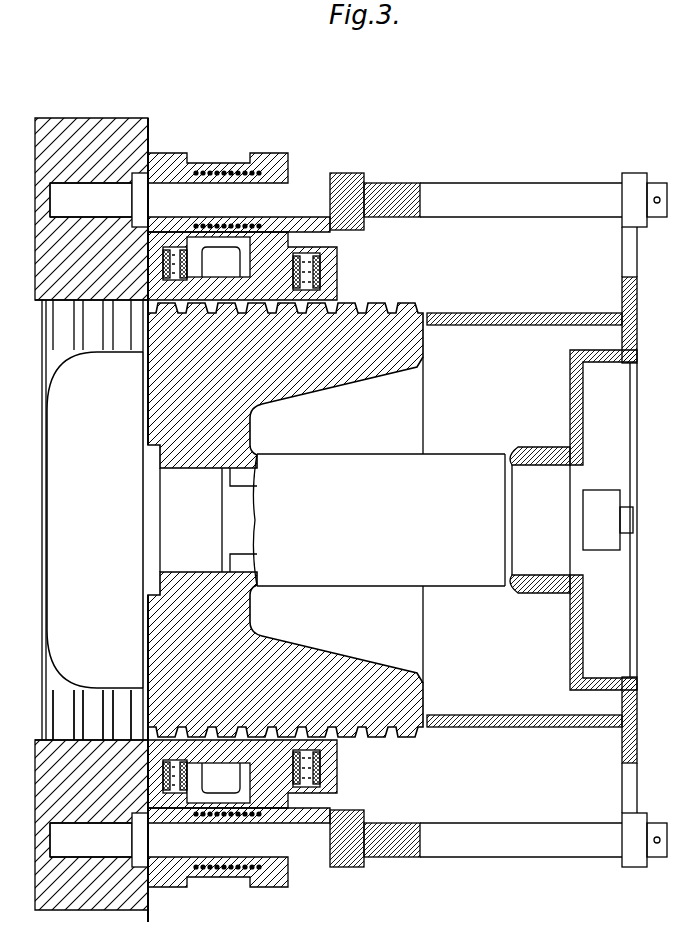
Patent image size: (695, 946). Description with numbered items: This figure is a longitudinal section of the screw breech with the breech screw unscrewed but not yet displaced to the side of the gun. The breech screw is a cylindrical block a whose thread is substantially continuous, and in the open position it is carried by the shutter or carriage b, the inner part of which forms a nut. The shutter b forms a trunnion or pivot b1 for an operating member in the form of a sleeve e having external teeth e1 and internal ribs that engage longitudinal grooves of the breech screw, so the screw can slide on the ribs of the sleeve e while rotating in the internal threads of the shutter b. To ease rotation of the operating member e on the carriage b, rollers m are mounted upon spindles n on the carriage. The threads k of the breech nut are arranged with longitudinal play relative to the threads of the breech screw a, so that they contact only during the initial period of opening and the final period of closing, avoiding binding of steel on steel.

The cylindrical block a is at (322, 363).
The shutter or carriage b is at (162, 283).
The trunnion or pivot b1 is at (194, 282).
The sleeve e is at (263, 300).
The external teeth e1 is at (219, 262).
The rollers m is at (172, 258).
The spindles n is at (167, 266).
The threads of the breech nut k is at (100, 733).